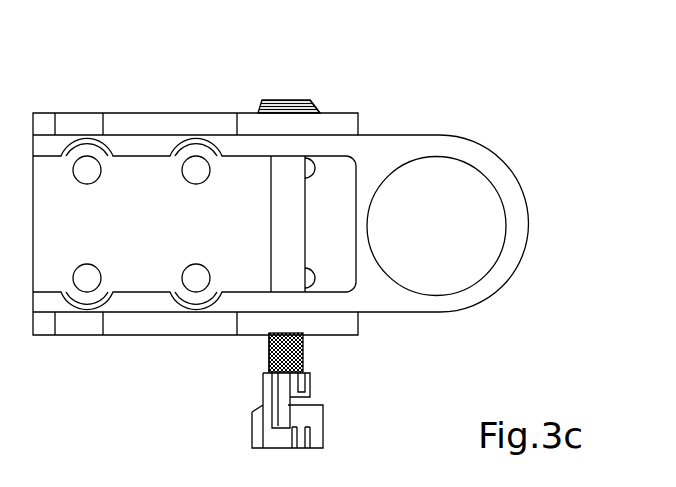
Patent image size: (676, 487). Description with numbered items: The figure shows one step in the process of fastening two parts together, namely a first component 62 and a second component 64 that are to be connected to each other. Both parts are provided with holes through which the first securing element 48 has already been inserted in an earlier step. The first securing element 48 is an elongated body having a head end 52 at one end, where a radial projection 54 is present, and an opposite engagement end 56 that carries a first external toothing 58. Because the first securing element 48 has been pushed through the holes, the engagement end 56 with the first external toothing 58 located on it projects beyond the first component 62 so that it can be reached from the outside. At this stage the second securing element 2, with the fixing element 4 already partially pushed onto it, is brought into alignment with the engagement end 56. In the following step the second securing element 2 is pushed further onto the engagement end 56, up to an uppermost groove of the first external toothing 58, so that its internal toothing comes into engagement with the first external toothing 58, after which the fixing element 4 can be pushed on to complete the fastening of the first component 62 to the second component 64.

The first component 62 is at (139, 113).
The second component 64 is at (428, 303).
The first securing element 48 is at (283, 227).
The head end 52 is at (293, 99).
The radial projection 54 is at (320, 103).
The engagement end 56 is at (308, 352).
The first external toothing 58 is at (268, 355).
The second securing element 2 is at (312, 382).
The fixing element 4 is at (324, 427).